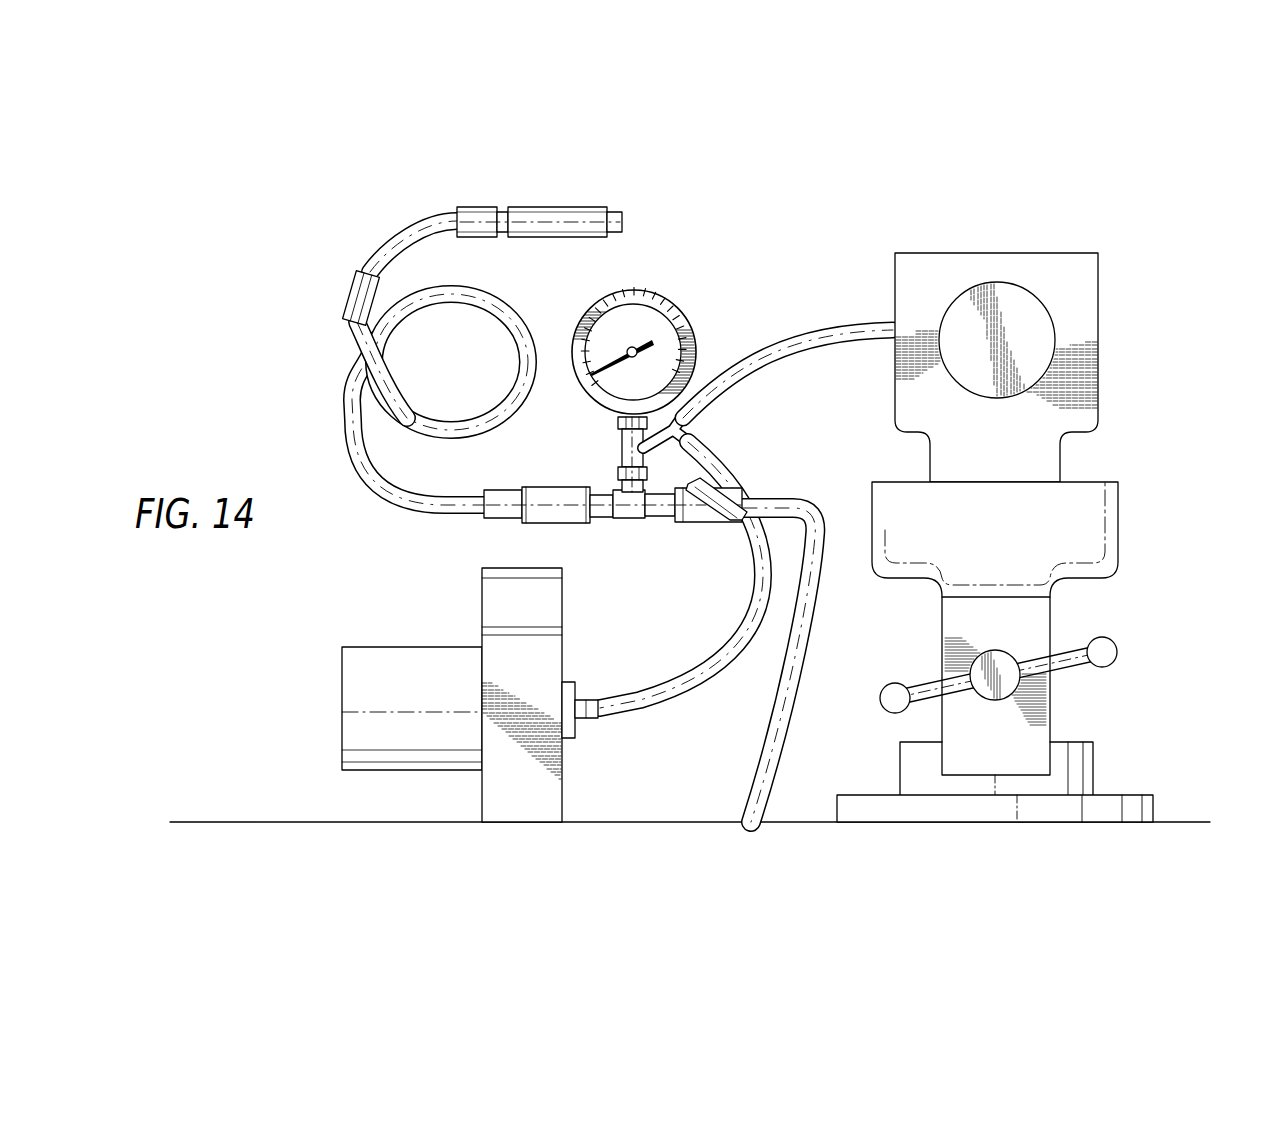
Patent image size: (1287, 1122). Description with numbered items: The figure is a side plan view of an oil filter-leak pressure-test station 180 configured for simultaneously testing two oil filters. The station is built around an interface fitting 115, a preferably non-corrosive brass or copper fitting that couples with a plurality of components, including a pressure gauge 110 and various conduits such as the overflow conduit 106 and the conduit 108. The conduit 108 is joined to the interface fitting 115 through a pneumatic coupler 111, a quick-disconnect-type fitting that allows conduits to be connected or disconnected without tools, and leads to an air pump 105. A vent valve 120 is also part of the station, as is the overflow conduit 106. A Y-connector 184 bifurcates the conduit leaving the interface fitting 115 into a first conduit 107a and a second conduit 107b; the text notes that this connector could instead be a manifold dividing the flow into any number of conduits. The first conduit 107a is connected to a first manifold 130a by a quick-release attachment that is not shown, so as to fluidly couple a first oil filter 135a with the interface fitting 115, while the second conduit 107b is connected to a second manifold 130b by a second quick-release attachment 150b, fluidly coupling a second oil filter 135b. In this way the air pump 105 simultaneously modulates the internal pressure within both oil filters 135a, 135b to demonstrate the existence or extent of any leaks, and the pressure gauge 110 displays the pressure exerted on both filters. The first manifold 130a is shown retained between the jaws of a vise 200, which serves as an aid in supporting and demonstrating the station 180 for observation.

The oil filter-leak pressure-test station 180 is at (851, 152).
The air pump 105 is at (580, 207).
The conduit 108 is at (345, 433).
The pressure gauge 110 is at (669, 298).
The pneumatic coupler 111 is at (557, 487).
The interface fitting 115 is at (632, 510).
The vent valve 120 is at (713, 527).
The Y-connector 184 is at (680, 428).
The first conduit 107a is at (818, 330).
The second conduit 107b is at (712, 665).
The overflow conduit 106 is at (748, 775).
The first manifold 130a is at (918, 278).
The first oil filter 135a is at (1022, 308).
The second manifold 130b is at (482, 608).
The second oil filter 135b is at (387, 647).
The second quick-release attachment 150b is at (580, 698).
The vise 200 is at (1072, 512).